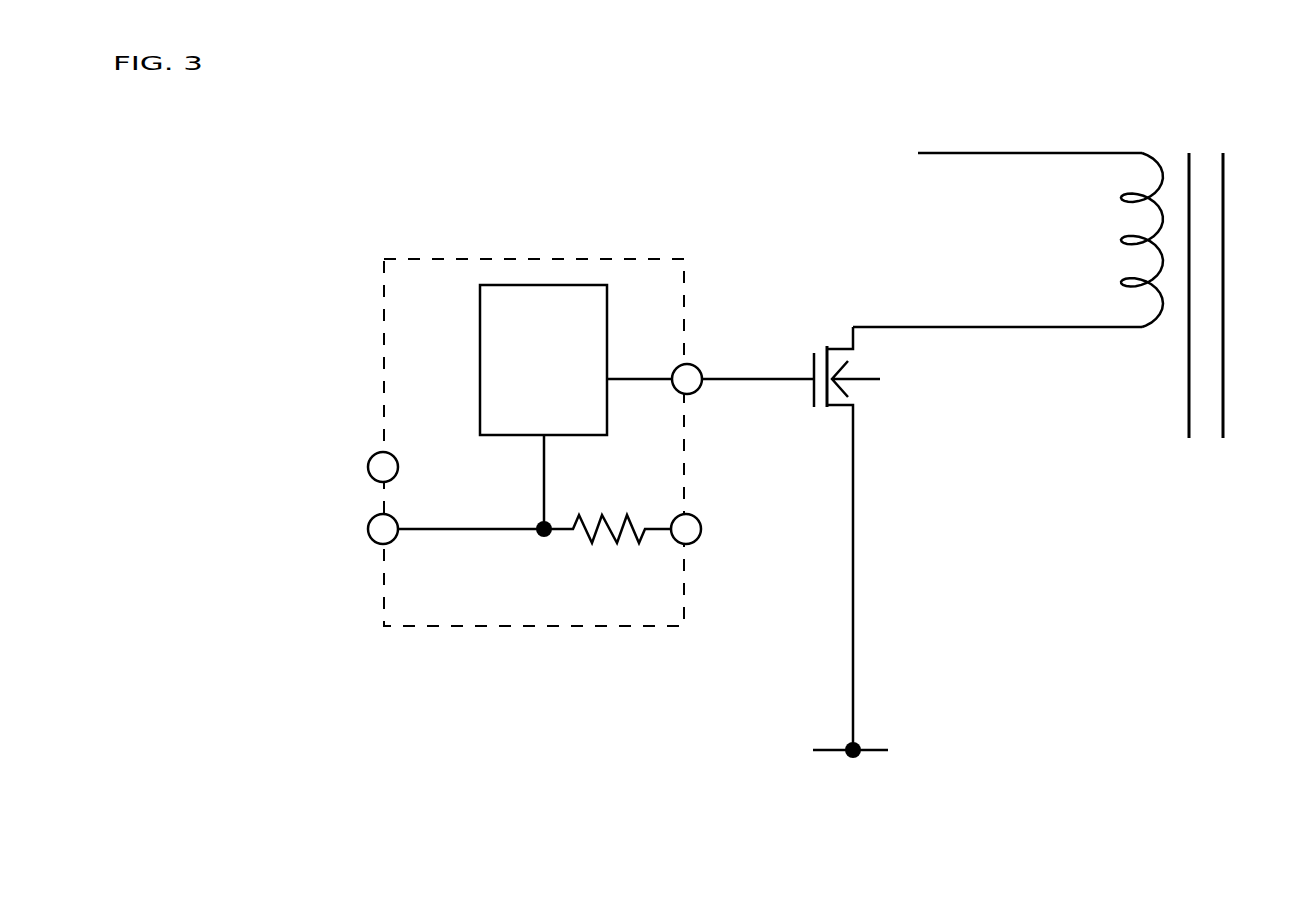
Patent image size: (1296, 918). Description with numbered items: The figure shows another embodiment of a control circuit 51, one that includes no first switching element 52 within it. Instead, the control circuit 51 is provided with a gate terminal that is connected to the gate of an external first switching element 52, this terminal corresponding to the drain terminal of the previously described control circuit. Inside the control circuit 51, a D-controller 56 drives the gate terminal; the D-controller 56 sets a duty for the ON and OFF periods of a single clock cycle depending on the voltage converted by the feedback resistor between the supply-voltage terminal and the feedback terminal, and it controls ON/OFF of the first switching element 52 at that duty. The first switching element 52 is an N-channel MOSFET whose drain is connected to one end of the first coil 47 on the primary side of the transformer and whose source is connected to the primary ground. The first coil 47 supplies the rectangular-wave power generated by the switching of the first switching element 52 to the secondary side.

The control circuit 51 is at (533, 258).
The D-controller 56 is at (480, 385).
The first switching element 52 is at (920, 386).
The first coil 47 is at (1153, 141).